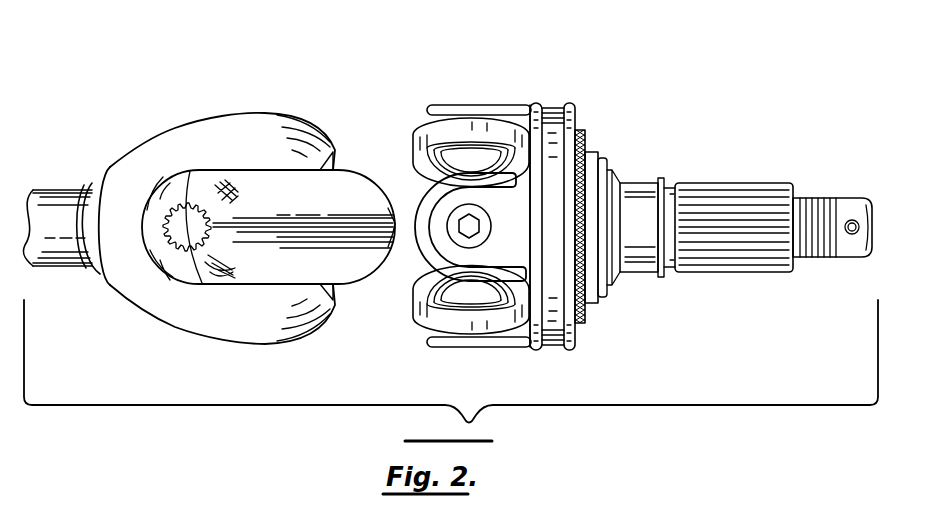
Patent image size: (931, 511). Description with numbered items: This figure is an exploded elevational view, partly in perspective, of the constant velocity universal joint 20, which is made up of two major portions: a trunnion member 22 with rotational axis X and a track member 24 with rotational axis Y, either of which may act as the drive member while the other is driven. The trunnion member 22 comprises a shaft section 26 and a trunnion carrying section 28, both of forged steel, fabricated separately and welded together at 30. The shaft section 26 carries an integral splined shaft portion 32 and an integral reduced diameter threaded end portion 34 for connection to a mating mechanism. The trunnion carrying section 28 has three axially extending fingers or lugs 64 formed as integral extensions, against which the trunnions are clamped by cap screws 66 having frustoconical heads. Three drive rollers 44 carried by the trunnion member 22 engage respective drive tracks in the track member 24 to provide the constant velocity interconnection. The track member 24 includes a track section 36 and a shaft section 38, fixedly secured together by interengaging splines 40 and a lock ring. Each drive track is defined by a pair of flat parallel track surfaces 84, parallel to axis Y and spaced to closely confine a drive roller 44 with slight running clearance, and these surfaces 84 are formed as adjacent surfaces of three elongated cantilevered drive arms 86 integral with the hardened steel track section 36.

The constant velocity universal joint 20 is at (488, 82).
The trunnion member 22 is at (579, 354).
The track member 24 is at (166, 319).
The shaft section 26 is at (630, 187).
The trunnion carrying section 28 is at (553, 105).
The weld 30 is at (583, 130).
The splined shaft portion 32 is at (718, 188).
The threaded end portion 34 is at (847, 197).
The track section 36 is at (241, 119).
The shaft section 38 is at (42, 197).
The interengaging splines 40 is at (199, 219).
The drive rollers 44 is at (412, 193).
The fingers or lugs 64 is at (447, 105).
The cap screws 66 is at (482, 215).
The track surfaces 84 is at (293, 171).
The drive arms 86 is at (334, 152).